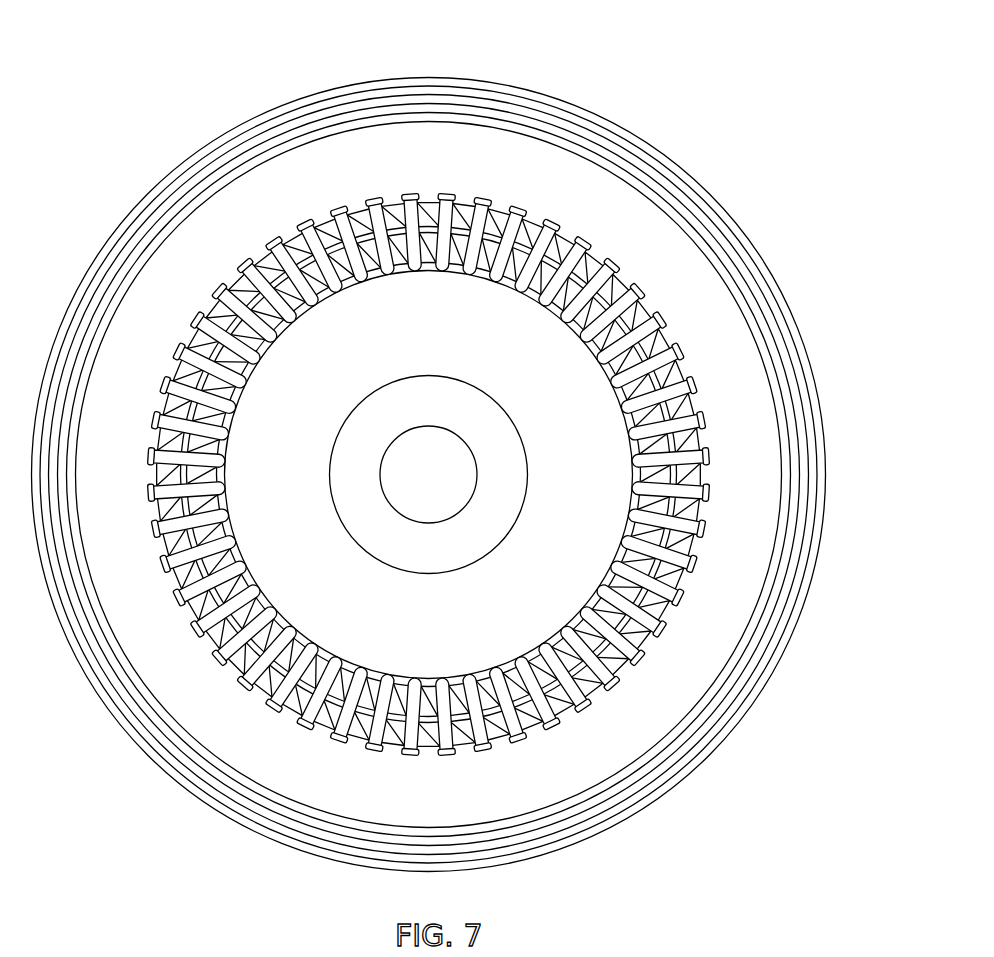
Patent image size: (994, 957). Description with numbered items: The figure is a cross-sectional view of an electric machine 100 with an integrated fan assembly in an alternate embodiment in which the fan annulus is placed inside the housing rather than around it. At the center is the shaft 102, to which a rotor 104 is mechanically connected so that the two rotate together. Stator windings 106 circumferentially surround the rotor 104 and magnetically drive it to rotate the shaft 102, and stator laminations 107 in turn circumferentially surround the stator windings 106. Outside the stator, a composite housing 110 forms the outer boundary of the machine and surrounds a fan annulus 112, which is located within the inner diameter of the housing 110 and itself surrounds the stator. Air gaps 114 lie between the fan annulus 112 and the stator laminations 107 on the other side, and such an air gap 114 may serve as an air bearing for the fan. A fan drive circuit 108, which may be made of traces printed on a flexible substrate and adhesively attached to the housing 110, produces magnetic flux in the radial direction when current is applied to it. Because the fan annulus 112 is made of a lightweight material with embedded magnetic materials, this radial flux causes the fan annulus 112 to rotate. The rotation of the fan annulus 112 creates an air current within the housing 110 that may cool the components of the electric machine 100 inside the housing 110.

The electric machine 100 is at (166, 118).
The shaft 102 is at (447, 505).
The rotor 104 is at (496, 448).
The stator windings 106 is at (652, 307).
The stator laminations 107 is at (180, 293).
The fan drive circuit 108 is at (554, 113).
The composite housing 110 is at (673, 167).
The fan annulus 112 is at (595, 152).
The air gap 114 is at (568, 150).